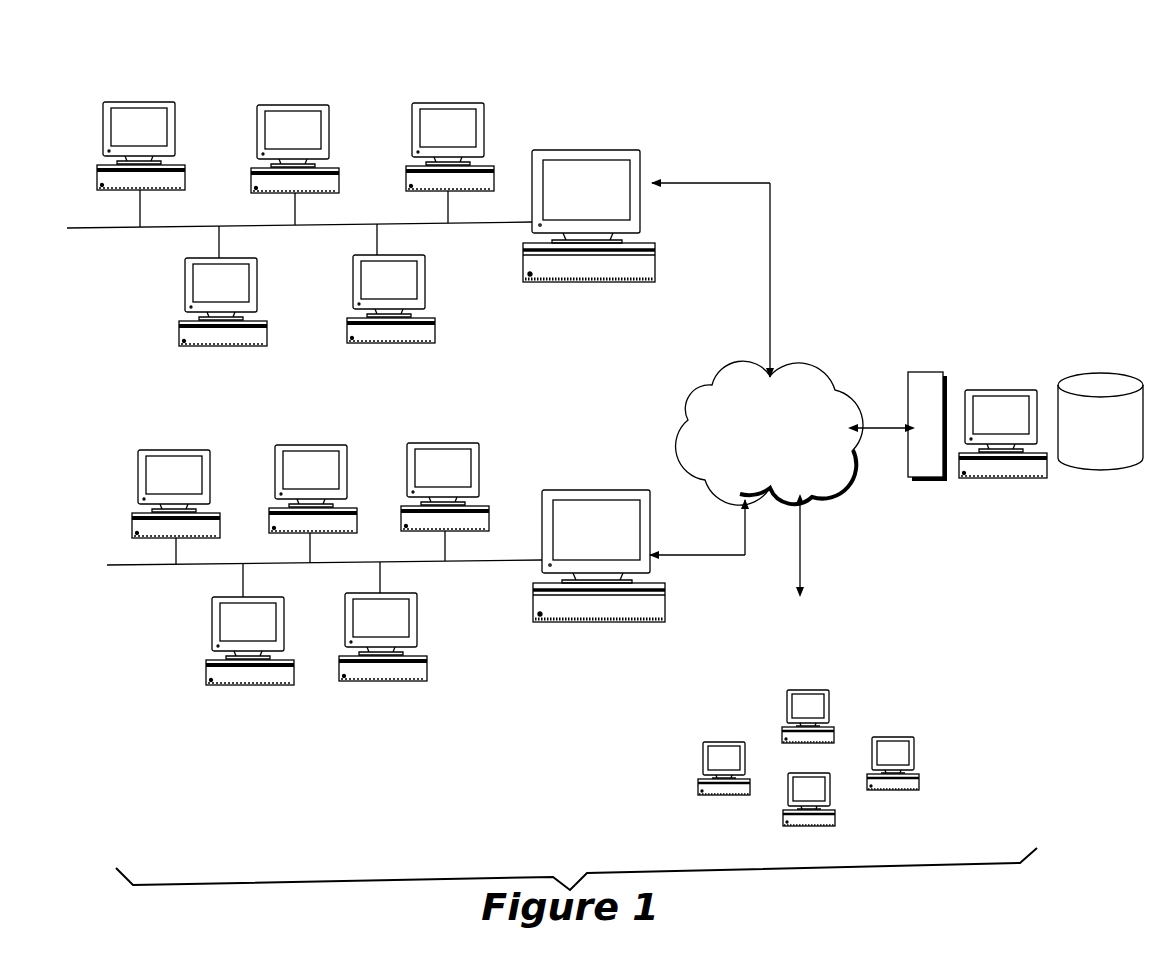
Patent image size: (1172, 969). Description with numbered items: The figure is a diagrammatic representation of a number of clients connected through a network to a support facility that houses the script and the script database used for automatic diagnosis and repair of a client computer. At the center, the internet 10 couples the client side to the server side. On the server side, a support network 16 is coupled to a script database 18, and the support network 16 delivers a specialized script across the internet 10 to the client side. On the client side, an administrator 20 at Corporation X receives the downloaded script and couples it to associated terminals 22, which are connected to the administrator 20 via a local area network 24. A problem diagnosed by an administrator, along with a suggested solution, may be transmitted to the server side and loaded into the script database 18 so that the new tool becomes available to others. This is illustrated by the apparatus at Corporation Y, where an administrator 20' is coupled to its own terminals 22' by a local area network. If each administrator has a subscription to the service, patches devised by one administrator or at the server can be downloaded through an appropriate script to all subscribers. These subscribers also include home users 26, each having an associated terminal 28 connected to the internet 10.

The internet 10 is at (769, 433).
The support network 16 is at (932, 478).
The script database 18 is at (1098, 372).
The administrator 20 is at (583, 182).
The administrator 20' is at (593, 595).
The terminals 22 is at (274, 191).
The terminals 22' is at (273, 536).
The local area network 24 is at (100, 228).
The home users 26 is at (821, 725).
The terminal 28 is at (820, 838).